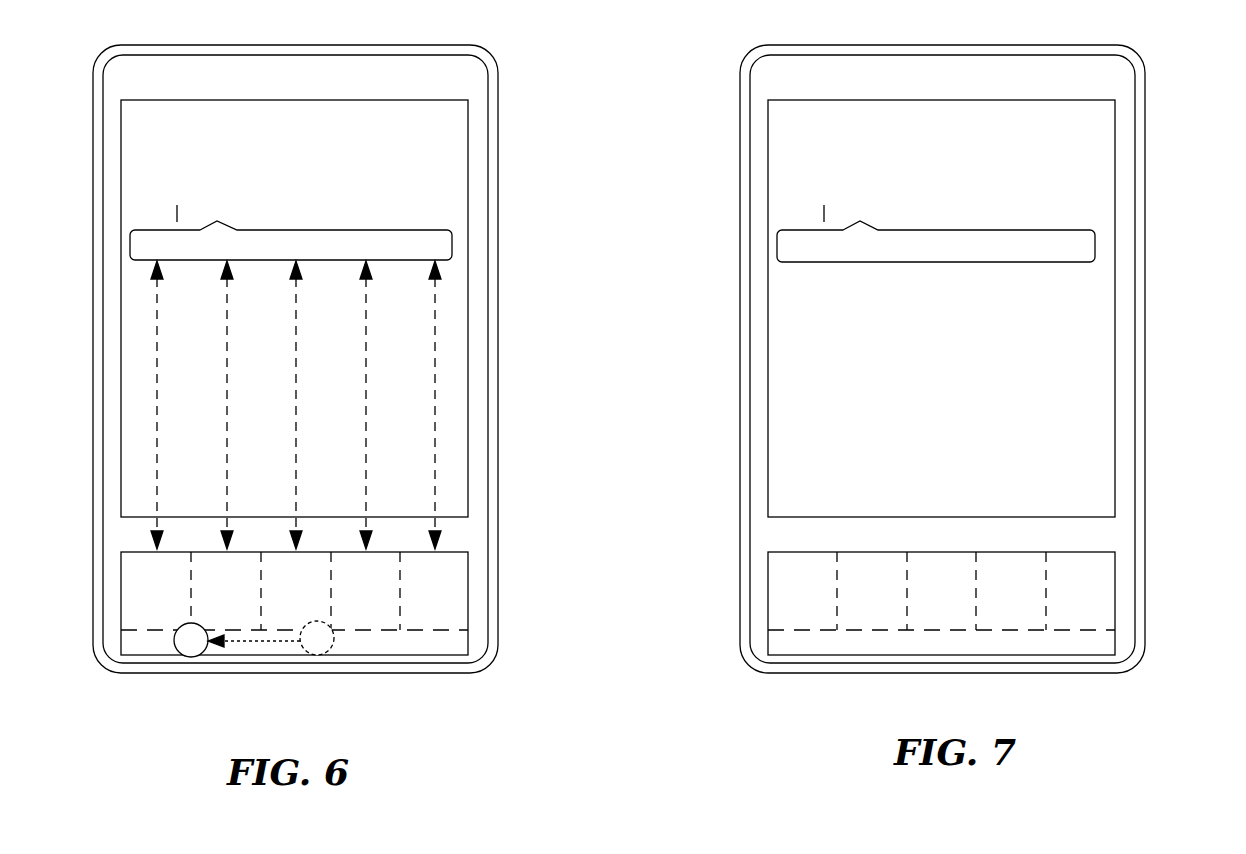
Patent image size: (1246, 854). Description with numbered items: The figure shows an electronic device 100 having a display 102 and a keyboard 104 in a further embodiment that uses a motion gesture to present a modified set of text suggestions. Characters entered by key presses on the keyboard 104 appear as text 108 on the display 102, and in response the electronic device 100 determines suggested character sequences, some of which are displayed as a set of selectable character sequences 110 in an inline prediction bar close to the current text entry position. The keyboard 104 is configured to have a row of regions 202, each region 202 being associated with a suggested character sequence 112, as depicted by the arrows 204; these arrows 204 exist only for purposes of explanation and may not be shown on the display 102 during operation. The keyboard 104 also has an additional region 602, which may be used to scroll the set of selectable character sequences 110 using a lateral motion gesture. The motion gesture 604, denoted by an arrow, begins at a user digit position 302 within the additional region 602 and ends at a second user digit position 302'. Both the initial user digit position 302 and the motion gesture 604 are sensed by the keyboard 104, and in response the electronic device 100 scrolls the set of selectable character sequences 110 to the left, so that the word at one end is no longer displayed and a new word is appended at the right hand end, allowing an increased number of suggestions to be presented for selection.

In FIG. 6, the electronic device 100 is at (93, 76).
In FIG. 7, the electronic device 100 is at (740, 76).
In FIG. 6, the display 102 is at (121, 204).
In FIG. 7, the display 102 is at (768, 204).
In FIG. 6, the keyboard 104 is at (121, 608).
In FIG. 7, the keyboard 104 is at (768, 608).
In FIG. 6, the text 108 is at (444, 112).
In FIG. 7, the text 108 is at (1091, 112).
In FIG. 6, the set of selectable character sequences 110 is at (130, 246).
In FIG. 7, the set of selectable character sequences 110 is at (777, 246).
In FIG. 6, the character sequence 112 is at (304, 277).
In FIG. 6, the region 202 is at (140, 576).
In FIG. 6, the arrows 204 is at (156, 375).
In FIG. 6, the user digit position 302 is at (348, 672).
In FIG. 6, the user digit position 302' is at (168, 664).
In FIG. 6, the additional region 602 is at (424, 640).
In FIG. 6, the motion gesture 604 is at (251, 643).